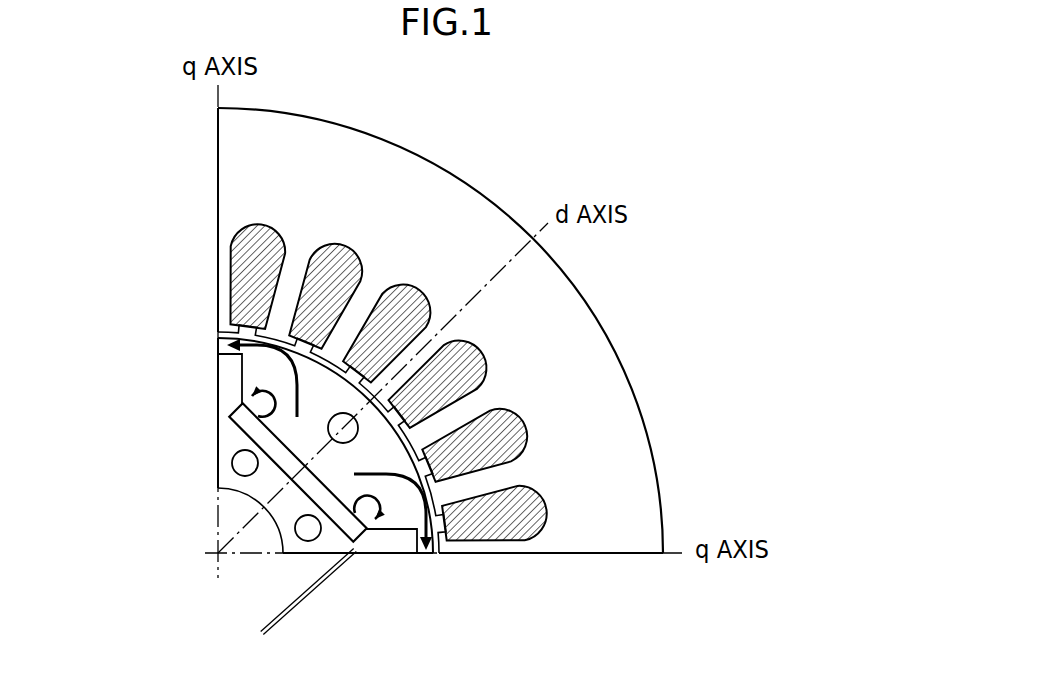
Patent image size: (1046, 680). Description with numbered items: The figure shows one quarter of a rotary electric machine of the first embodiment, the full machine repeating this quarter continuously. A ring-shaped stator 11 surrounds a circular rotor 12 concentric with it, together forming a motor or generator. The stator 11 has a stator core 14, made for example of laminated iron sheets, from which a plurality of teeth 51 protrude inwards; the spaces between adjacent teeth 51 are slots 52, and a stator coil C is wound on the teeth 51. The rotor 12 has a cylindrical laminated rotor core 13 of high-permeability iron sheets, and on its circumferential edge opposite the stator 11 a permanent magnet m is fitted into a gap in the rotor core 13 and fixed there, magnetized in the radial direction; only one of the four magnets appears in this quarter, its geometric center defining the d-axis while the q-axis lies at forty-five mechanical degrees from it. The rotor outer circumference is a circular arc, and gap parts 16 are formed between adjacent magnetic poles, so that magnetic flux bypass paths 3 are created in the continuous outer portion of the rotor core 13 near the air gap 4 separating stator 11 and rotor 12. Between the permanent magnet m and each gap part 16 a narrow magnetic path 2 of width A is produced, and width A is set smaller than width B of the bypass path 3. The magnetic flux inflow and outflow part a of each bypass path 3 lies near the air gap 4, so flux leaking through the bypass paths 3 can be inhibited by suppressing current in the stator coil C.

The stator 11 is at (427, 309).
The rotor 12 is at (319, 502).
The rotor core 13 is at (263, 373).
The stator core 14 is at (640, 476).
The gap part 16 is at (228, 392).
The magnetic path 2 is at (367, 548).
The magnetic flux bypass path 3 is at (222, 360).
The air gap 4 is at (210, 332).
The teeth 51 is at (287, 290).
The slot 52 is at (232, 248).
The magnetic flux inflow and outflow part a is at (428, 568).
The permanent magnet m is at (295, 468).
The width of magnetic path A is at (238, 598).
The width of magnetic flux bypass path B is at (438, 556).
The stator coil C is at (267, 220).